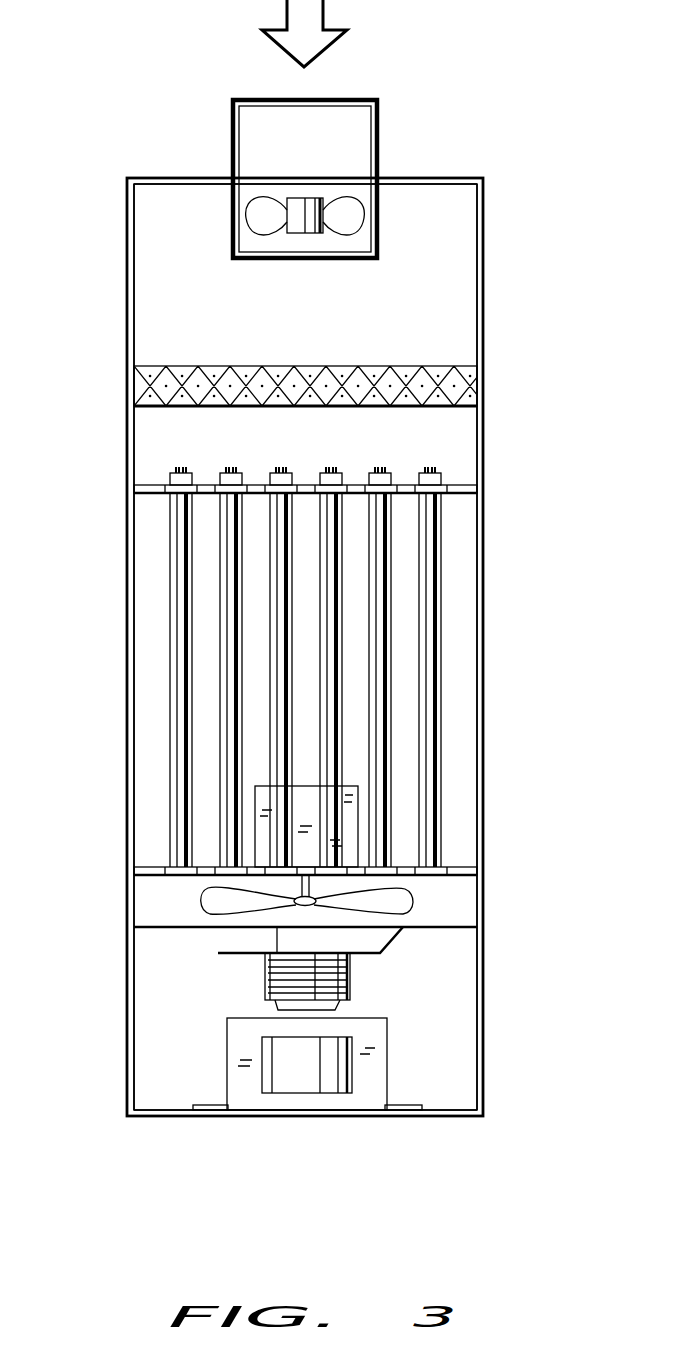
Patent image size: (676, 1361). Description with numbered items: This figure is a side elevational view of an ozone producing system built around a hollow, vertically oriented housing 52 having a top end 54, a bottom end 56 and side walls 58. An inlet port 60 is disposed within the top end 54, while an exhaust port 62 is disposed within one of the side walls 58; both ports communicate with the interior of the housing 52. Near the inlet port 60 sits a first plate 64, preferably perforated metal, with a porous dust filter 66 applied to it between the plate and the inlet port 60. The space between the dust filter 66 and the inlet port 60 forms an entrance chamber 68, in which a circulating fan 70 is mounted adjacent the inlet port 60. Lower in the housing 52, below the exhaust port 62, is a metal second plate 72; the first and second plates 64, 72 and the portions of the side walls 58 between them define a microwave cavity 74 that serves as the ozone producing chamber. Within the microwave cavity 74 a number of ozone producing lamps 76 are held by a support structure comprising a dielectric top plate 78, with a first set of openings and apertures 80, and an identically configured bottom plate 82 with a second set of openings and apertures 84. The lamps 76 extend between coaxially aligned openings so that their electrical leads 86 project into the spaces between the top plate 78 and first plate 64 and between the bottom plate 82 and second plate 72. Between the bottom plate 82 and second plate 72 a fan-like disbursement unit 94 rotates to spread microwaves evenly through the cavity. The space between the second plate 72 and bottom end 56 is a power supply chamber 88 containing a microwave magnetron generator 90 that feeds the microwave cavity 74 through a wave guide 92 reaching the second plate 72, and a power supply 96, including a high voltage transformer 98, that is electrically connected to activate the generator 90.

The housing 52 is at (483, 276).
The top end 54 is at (176, 178).
The bottom end 56 is at (160, 1118).
The side walls 58 is at (126, 232).
The inlet port 60 is at (377, 123).
The exhaust port 62 is at (307, 792).
The first plate 64 is at (467, 398).
The dust filter 66 is at (477, 368).
The entrance chamber 68 is at (468, 203).
The circulating fan 70 is at (311, 198).
The second plate 72 is at (475, 925).
The microwave cavity 74 is at (138, 573).
The ozone producing lamps 76 is at (383, 575).
The top plate 78 is at (478, 485).
The first set of apertures 80 is at (145, 484).
The bottom plate 82 is at (478, 870).
The second set of apertures 84 is at (148, 865).
The electrical leads 86 is at (178, 466).
The power supply chamber 88 is at (150, 1063).
The microwave magnetron generator 90 is at (265, 980).
The wave guide 92 is at (390, 943).
The disbursement unit 94 is at (297, 902).
The power supply 96 is at (365, 1122).
The high voltage transformer 98 is at (383, 1063).